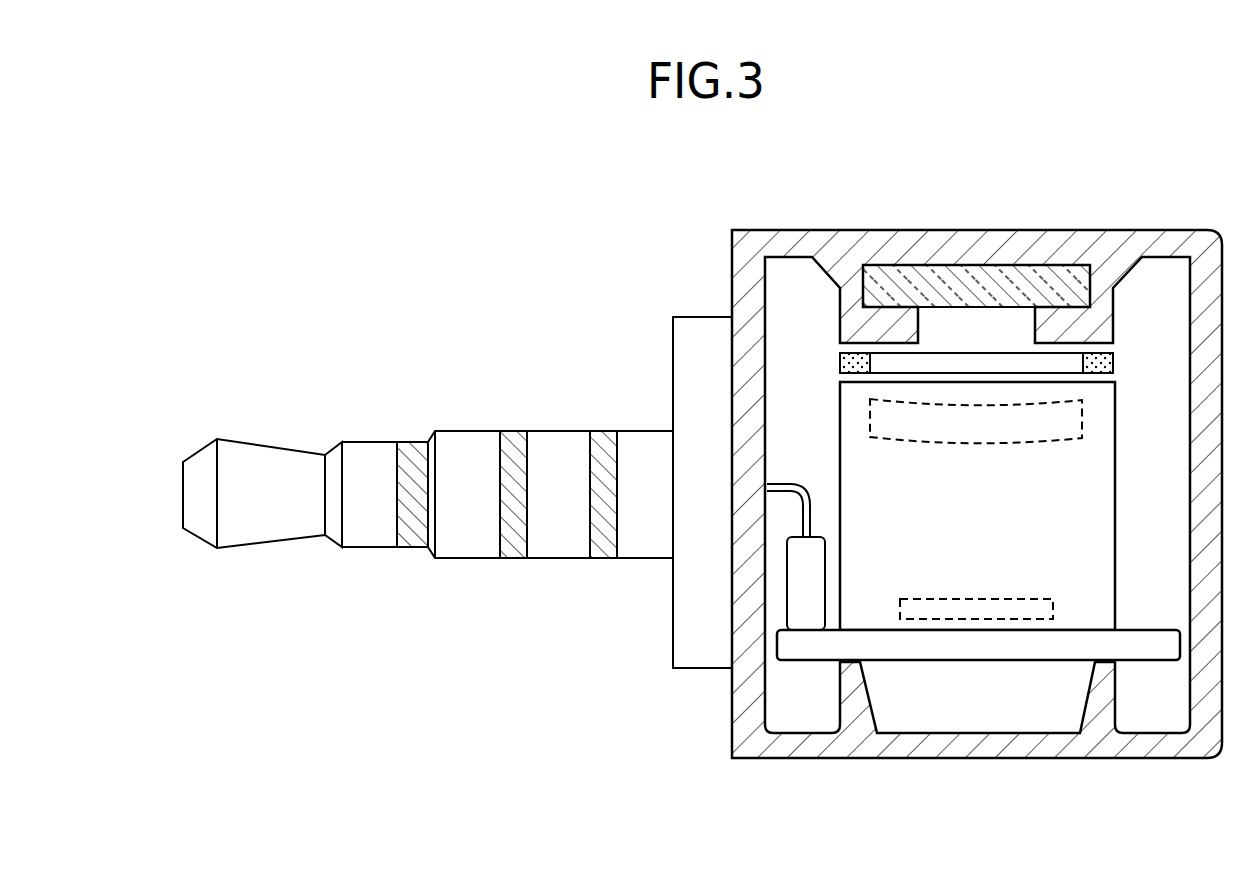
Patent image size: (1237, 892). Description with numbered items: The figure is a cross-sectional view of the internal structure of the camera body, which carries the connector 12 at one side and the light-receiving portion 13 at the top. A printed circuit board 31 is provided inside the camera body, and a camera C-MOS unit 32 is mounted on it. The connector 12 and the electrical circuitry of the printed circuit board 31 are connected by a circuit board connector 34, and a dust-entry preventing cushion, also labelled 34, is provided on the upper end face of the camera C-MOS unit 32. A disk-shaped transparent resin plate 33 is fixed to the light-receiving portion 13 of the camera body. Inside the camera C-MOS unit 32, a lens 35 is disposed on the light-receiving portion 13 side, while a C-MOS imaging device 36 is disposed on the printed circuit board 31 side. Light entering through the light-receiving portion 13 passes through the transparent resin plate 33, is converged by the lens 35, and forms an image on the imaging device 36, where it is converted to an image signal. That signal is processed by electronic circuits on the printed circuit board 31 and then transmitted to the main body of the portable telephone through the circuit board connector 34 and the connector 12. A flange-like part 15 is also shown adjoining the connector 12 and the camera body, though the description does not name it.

The connector 12 is at (485, 575).
The light-receiving portion 13 is at (940, 243).
The flange 15 is at (703, 333).
The printed circuit board 31 is at (1125, 645).
The camera C-MOS unit 32 is at (1098, 490).
The transparent resin plate 33 is at (1055, 275).
The circuit board connector 34 is at (1113, 363).
The lens 35 is at (1078, 418).
The C-MOS imaging device 36 is at (1053, 617).